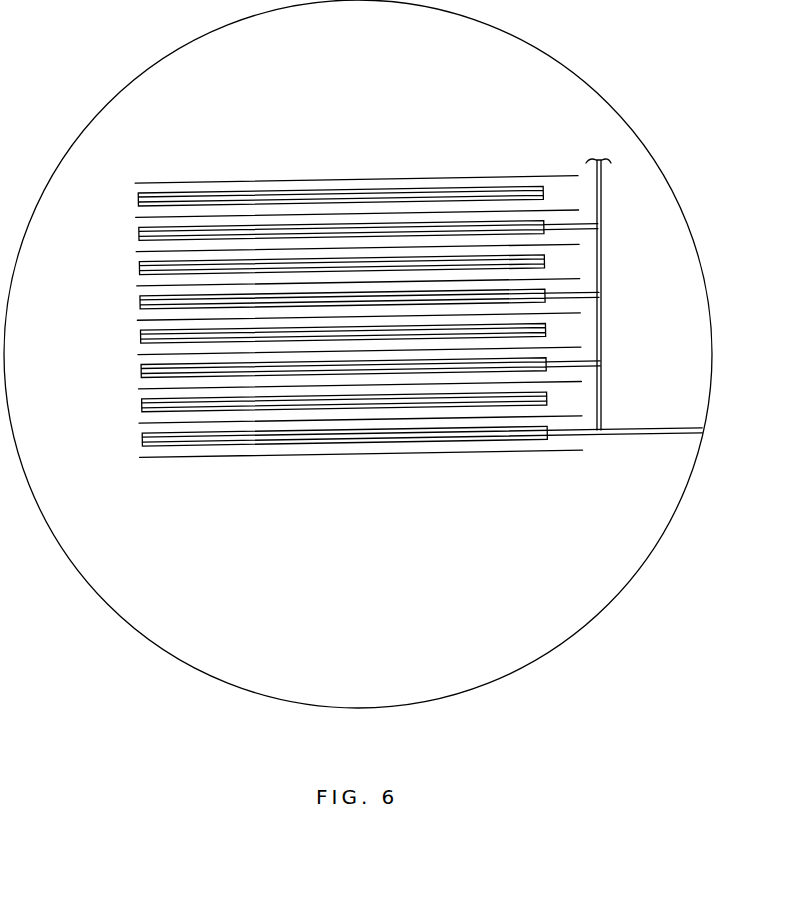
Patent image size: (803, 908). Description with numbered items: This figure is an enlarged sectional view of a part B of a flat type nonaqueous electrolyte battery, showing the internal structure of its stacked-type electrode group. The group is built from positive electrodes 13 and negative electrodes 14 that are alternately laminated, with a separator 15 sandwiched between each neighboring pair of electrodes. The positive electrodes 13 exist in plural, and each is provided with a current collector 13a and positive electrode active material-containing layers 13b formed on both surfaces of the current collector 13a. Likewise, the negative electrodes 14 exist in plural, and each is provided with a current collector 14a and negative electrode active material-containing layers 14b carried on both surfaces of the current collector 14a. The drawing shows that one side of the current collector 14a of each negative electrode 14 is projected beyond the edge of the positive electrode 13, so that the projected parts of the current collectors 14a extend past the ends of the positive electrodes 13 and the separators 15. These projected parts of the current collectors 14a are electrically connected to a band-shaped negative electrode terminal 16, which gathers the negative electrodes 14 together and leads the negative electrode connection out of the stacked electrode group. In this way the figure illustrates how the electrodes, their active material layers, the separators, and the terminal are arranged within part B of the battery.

The positive electrode 13 is at (285, 326).
The current collector 13a is at (144, 406).
The positive electrode active material-containing layer 13b is at (144, 399).
The negative electrode 14 is at (305, 384).
The current collector 14a is at (580, 224).
The negative electrode active material-containing layer 14b is at (144, 436).
The separator 15 is at (421, 177).
The band-shaped negative electrode terminal 16 is at (653, 433).
The part B is at (603, 608).